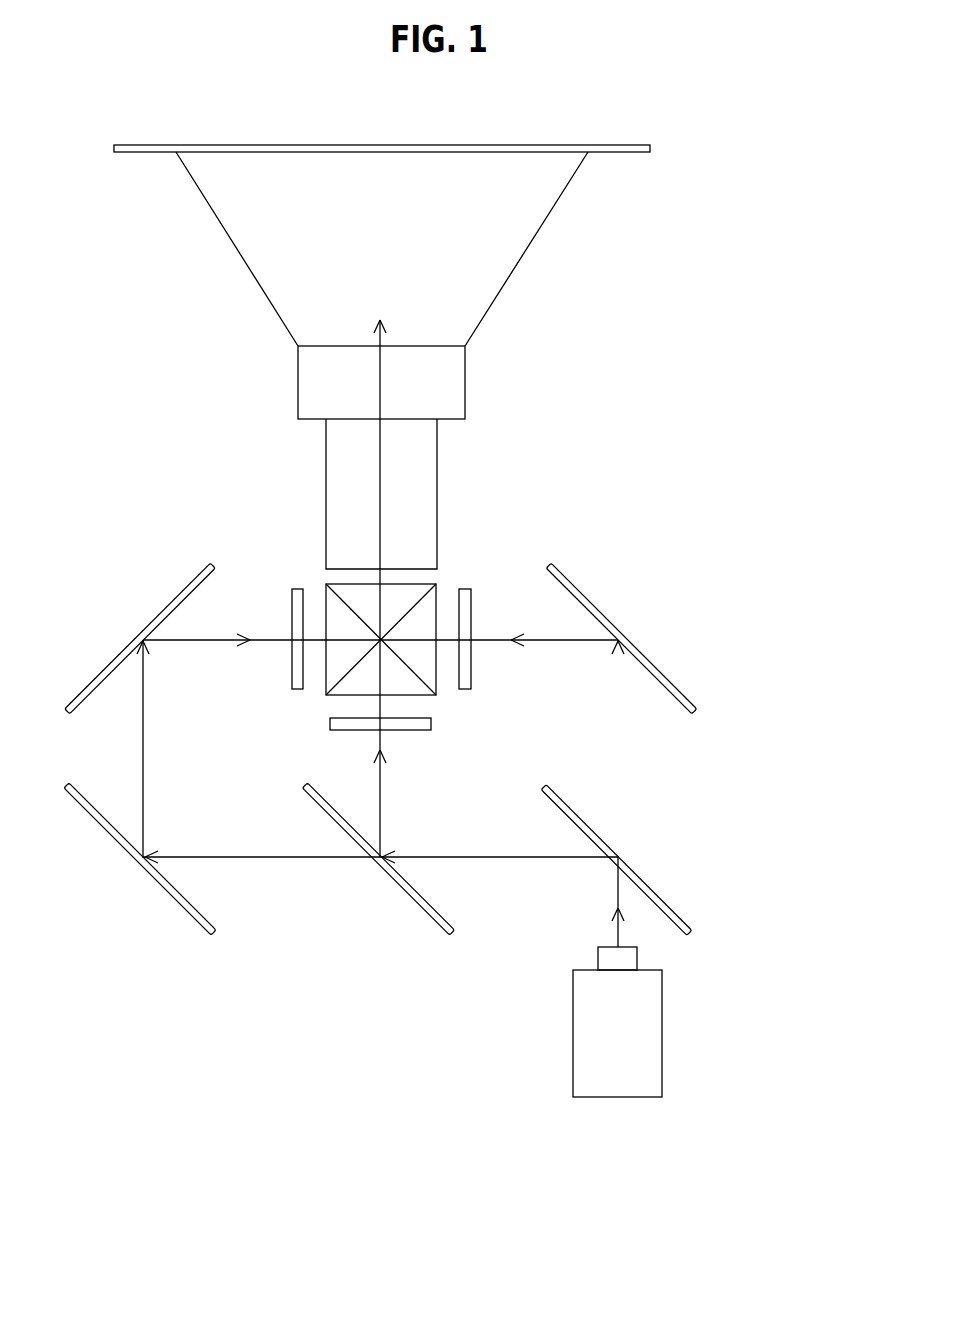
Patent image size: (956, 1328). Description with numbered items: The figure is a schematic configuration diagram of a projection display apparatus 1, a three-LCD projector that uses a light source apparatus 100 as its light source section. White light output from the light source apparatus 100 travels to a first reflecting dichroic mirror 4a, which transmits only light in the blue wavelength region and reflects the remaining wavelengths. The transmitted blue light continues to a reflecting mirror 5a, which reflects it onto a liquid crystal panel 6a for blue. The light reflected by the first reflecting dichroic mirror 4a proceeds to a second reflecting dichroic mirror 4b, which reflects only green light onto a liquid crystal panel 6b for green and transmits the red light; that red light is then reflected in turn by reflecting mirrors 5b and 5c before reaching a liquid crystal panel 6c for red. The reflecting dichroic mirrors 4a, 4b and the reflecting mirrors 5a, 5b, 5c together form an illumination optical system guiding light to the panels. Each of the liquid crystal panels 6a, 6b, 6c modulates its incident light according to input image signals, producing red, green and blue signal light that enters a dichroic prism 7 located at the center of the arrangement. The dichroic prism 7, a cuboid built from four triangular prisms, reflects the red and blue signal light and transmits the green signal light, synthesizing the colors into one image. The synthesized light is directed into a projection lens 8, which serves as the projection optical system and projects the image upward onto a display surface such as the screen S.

The projection display apparatus 1 is at (777, 211).
The screen S is at (650, 149).
The projection lens 8 is at (465, 381).
The dichroic prism 7 is at (326, 680).
The liquid crystal panel for blue 6a is at (467, 588).
The liquid crystal panel for green 6b is at (431, 724).
The liquid crystal panel for red 6c is at (297, 588).
The reflecting mirror 5a is at (620, 633).
The reflecting mirror 5b is at (140, 861).
The reflecting mirror 5c is at (140, 633).
The first reflecting dichroic mirror 4a is at (613, 862).
The second reflecting dichroic mirror 4b is at (376, 862).
The light source apparatus 100 is at (662, 1005).